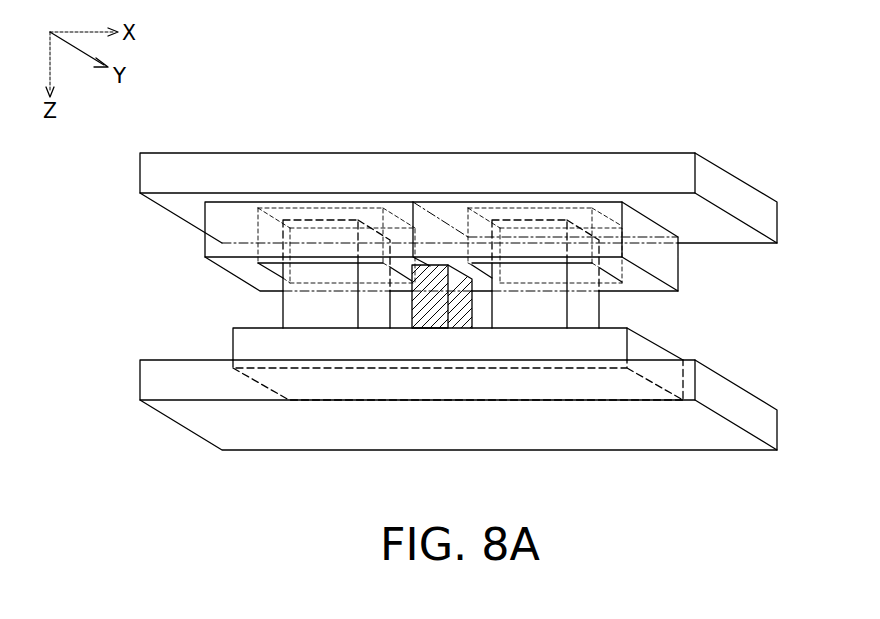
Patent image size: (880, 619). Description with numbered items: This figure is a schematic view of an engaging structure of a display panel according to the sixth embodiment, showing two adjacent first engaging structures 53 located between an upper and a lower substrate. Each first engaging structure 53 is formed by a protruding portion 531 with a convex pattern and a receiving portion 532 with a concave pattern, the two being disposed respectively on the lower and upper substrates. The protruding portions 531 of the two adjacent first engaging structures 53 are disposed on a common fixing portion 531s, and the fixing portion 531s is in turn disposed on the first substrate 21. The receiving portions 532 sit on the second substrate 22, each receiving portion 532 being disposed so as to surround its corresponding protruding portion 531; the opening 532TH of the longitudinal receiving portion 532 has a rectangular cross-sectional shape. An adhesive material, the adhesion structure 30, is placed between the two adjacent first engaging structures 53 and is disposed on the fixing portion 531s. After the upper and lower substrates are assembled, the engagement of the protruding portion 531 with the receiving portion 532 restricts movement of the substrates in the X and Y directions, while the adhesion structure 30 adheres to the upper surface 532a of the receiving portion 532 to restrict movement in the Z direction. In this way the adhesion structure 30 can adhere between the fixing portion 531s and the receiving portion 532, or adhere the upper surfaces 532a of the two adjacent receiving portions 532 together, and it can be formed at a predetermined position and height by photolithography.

The first substrate 21 is at (151, 382).
The second substrate 22 is at (150, 177).
The adhesion structure 30 is at (422, 318).
The first engaging structure 53 is at (125, 227).
The protruding portion 531 is at (287, 315).
The fixing portion 531s is at (250, 347).
The receiving portion 532 is at (209, 240).
The upper surface of the receiving portion 532a is at (403, 258).
The opening 532TH is at (284, 210).